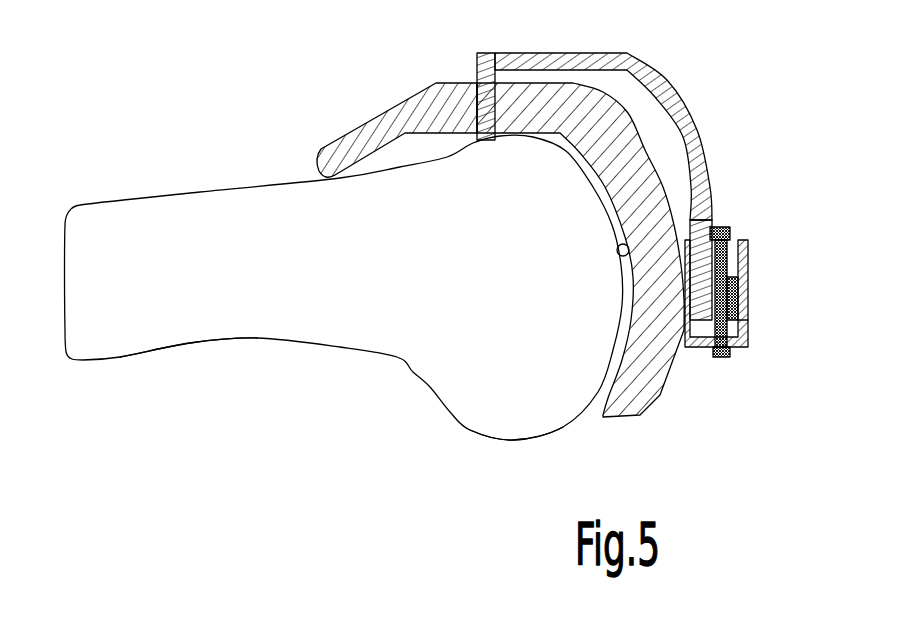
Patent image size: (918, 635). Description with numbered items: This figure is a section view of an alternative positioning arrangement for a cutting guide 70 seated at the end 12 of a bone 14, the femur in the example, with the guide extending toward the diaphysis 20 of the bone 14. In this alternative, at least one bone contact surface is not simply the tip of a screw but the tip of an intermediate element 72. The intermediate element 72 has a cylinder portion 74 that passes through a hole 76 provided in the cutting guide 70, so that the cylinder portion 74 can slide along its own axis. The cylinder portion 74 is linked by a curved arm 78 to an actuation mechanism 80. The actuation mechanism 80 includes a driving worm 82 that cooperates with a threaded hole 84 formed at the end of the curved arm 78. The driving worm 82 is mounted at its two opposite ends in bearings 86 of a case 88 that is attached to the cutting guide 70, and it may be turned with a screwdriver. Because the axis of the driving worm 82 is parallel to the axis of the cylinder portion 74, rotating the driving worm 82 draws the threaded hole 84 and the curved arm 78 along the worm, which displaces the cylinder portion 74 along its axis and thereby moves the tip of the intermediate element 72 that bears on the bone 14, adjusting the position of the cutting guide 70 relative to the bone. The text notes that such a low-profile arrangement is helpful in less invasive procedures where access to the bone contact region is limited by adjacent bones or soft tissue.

The end 12 is at (515, 441).
The bone 14 is at (201, 345).
The diaphysis 20 is at (176, 197).
The cutting guide 70 is at (659, 387).
The intermediate element 72 is at (661, 73).
The cylinder portion 74 is at (476, 70).
The hole 76 is at (437, 92).
The curved arm 78 is at (699, 137).
The actuation mechanism 80 is at (745, 303).
The driving worm 82 is at (713, 333).
The threaded hole 84 is at (736, 290).
The bearings 86 is at (722, 233).
The case 88 is at (747, 337).